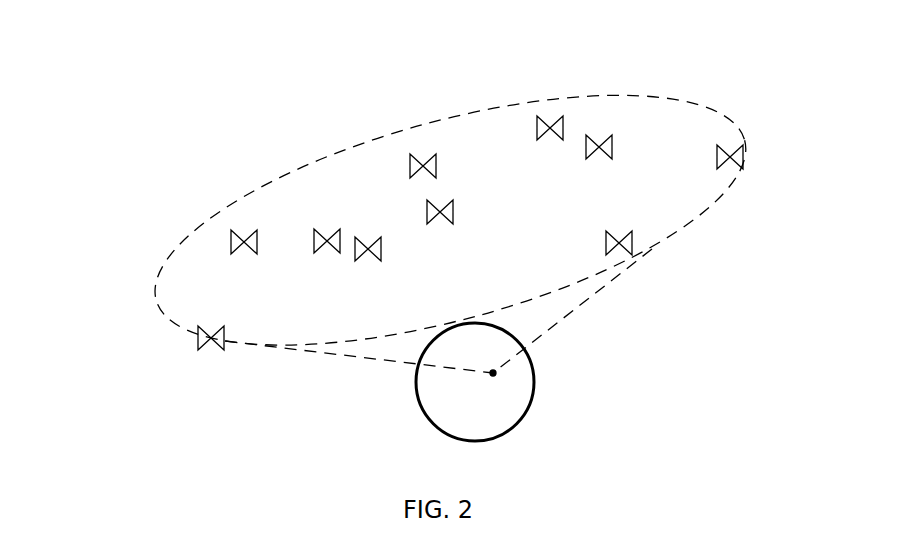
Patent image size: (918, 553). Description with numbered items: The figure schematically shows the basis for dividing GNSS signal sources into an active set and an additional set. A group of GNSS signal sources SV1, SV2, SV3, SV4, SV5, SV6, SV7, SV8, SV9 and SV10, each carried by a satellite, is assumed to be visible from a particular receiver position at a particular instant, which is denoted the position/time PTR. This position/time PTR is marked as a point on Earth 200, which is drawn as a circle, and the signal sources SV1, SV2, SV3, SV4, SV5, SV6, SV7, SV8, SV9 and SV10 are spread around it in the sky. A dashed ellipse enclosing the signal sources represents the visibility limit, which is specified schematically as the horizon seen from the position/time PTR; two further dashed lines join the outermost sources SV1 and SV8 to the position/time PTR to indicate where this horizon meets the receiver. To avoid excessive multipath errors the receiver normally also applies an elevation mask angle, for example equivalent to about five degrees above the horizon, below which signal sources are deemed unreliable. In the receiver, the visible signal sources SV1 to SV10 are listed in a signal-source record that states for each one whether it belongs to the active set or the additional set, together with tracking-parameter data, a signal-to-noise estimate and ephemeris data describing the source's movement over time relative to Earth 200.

The GNSS signal source SV1 is at (205, 333).
The GNSS signal source SV2 is at (231, 243).
The GNSS signal source SV3 is at (335, 230).
The GNSS signal source SV4 is at (373, 257).
The GNSS signal source SV5 is at (412, 157).
The GNSS signal source SV6 is at (550, 114).
The GNSS signal source SV7 is at (590, 137).
The GNSS signal source SV8 is at (633, 240).
The GNSS signal source SV9 is at (730, 143).
The GNSS signal source SV10 is at (447, 224).
The position/time PTR is at (493, 373).
The Earth 200 is at (428, 419).